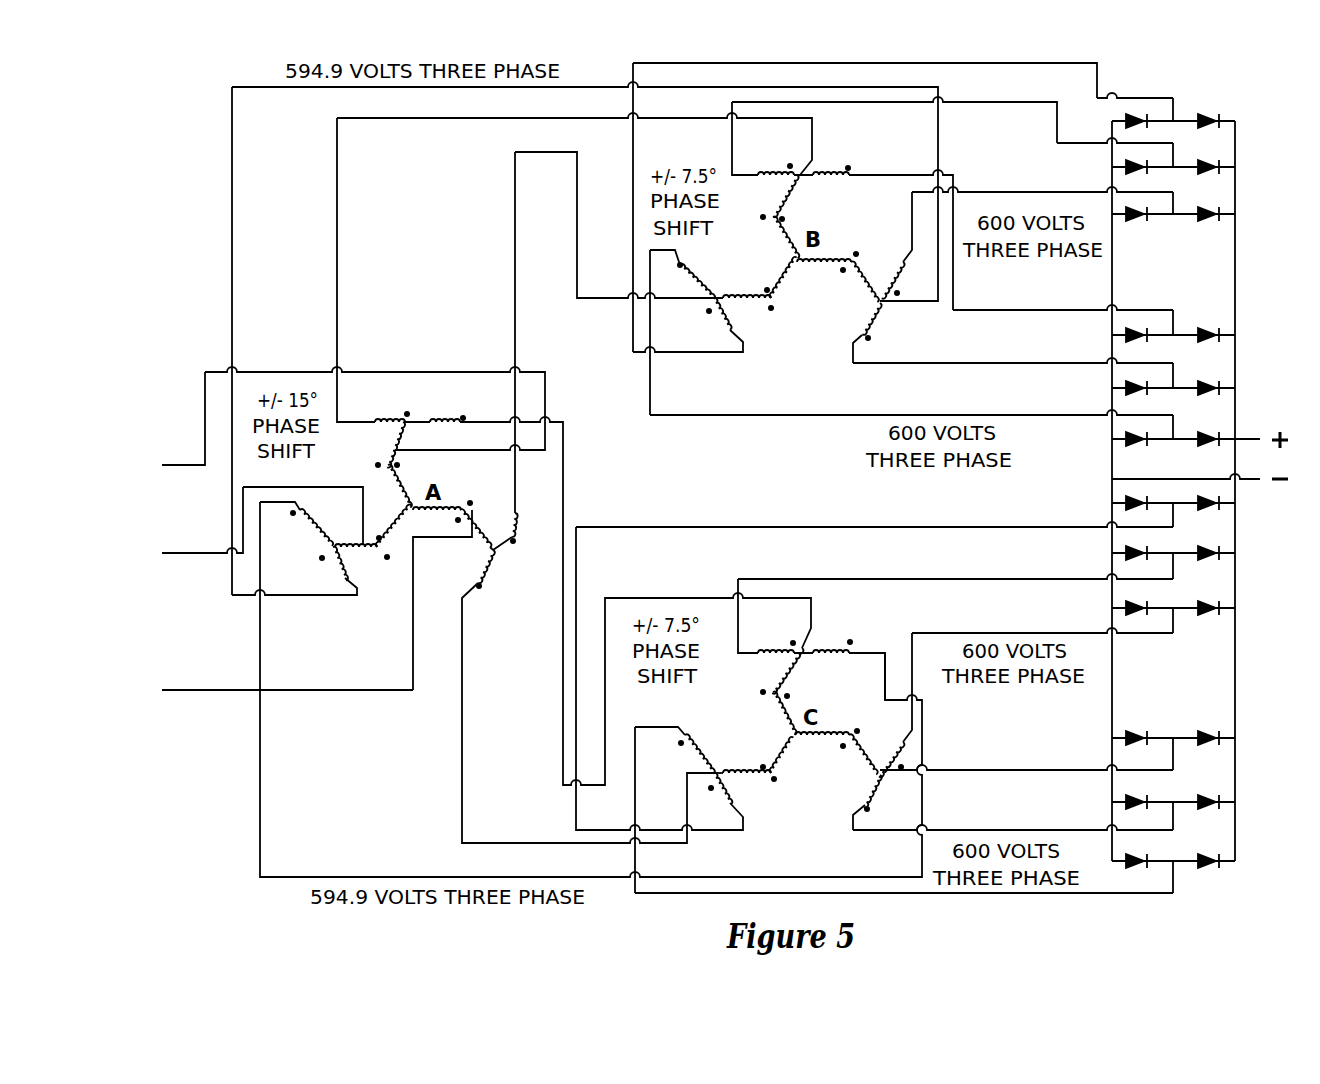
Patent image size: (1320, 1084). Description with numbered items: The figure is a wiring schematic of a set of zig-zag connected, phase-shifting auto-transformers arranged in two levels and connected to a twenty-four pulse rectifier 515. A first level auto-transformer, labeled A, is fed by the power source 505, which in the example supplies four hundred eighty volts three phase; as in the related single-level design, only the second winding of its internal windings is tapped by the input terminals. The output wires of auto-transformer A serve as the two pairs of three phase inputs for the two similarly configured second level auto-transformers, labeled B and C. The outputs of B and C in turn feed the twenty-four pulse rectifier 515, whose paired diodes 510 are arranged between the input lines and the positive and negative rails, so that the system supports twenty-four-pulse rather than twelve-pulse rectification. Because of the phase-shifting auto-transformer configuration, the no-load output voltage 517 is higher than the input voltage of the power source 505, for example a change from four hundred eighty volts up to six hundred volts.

The power source 505 is at (178, 452).
The diode 510 is at (1092, 495).
The twenty-four pulse rectifier 515 is at (1212, 100).
The no-load output voltage 517 is at (1278, 418).